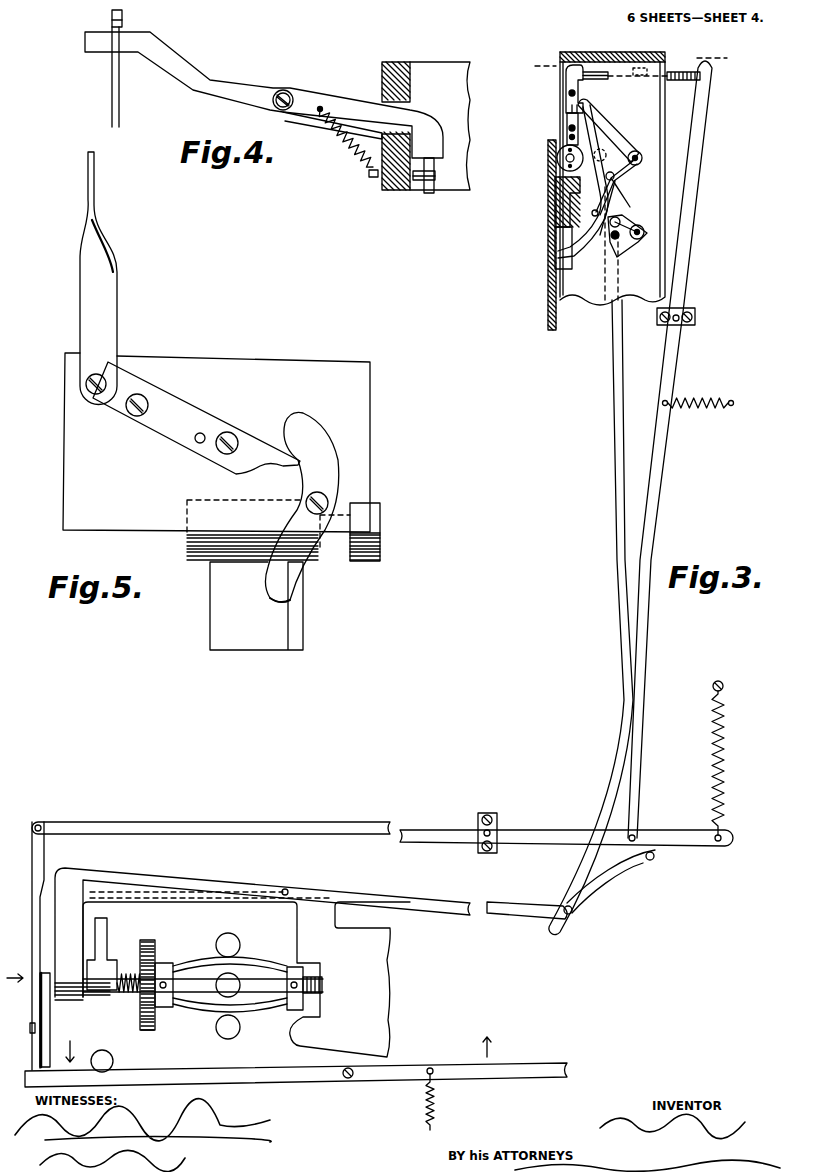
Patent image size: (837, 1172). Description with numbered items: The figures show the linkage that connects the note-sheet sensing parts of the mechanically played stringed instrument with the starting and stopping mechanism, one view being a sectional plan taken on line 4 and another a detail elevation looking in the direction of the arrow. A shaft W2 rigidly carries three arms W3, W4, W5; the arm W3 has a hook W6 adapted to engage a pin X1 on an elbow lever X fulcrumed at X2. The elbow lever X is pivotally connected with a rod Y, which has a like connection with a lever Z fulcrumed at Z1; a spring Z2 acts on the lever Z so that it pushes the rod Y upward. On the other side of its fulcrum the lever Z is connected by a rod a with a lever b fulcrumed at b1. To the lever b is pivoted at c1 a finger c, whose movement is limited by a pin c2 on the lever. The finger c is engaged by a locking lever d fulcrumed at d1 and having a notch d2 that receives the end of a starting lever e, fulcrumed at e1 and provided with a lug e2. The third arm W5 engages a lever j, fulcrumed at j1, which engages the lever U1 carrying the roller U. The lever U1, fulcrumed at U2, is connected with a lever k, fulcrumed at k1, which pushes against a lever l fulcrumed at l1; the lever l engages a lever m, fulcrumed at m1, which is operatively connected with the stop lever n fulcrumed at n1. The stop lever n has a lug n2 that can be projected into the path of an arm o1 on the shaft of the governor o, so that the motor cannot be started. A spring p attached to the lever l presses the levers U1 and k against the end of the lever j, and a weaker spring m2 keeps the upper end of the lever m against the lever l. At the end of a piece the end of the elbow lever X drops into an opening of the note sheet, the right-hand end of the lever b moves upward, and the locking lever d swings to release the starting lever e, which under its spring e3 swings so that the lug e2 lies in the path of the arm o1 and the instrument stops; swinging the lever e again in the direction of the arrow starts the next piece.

In FIG. 3, the section line 4 is at (630, 61).
In FIG. 5, the rod a is at (98, 278).
In FIG. 5, the lever b is at (187, 420).
In FIG. 3, the lever b is at (58, 1000).
In FIG. 5, the fulcrum of lever b b1 is at (130, 425).
In FIG. 5, the finger c is at (249, 452).
In FIG. 5, the pivot of finger c c1 is at (219, 461).
In FIG. 5, the pin c2 is at (231, 434).
In FIG. 5, the locking lever d is at (340, 497).
In FIG. 3, the locking lever d is at (30, 1048).
In FIG. 5, the fulcrum of locking lever d d1 is at (317, 483).
In FIG. 5, the notch d2 is at (273, 573).
In FIG. 3, the starting lever e is at (305, 1085).
In FIG. 3, the fulcrum of starting lever e e1 is at (353, 1084).
In FIG. 5, the lug e2 is at (370, 570).
In FIG. 3, the lug e2 is at (113, 1058).
In FIG. 3, the spring e3 is at (440, 1110).
In FIG. 3, the lever j is at (603, 140).
In FIG. 3, the fulcrum of lever j j1 is at (603, 173).
In FIG. 4, the lever k is at (421, 194).
In FIG. 3, the lever k is at (566, 75).
In FIG. 3, the fulcrum of lever k k1 is at (569, 95).
In FIG. 4, the lever l is at (205, 83).
In FIG. 3, the lever l is at (684, 66).
In FIG. 4, the fulcrum of lever l l1 is at (287, 88).
In FIG. 3, the fulcrum of lever l l1 is at (643, 74).
In FIG. 4, the lever m is at (118, 114).
In FIG. 3, the lever m is at (664, 493).
In FIG. 3, the fulcrum of lever m m1 is at (664, 327).
In FIG. 3, the spring m2 is at (715, 392).
In FIG. 3, the stop lever n is at (407, 900).
In FIG. 3, the fulcrum of stop lever n n1 is at (286, 889).
In FIG. 3, the lug n2 is at (118, 908).
In FIG. 3, the governor o is at (172, 967).
In FIG. 3, the governor arm o1 is at (107, 948).
In FIG. 4, the spring p is at (348, 160).
In FIG. 3, the upright bar u is at (25, 946).
In FIG. 3, the roller U is at (556, 158).
In FIG. 4, the lever U1 is at (433, 194).
In FIG. 3, the lever U1 is at (568, 128).
In FIG. 3, the fulcrum of lever U' U2 is at (568, 137).
In FIG. 3, the shaft W2 is at (645, 233).
In FIG. 3, the arm W3 is at (634, 241).
In FIG. 3, the arm W4 is at (650, 218).
In FIG. 3, the arm W5 is at (641, 213).
In FIG. 3, the hook W6 is at (611, 256).
In FIG. 3, the elbow lever X is at (627, 171).
In FIG. 3, the pin X1 is at (607, 231).
In FIG. 3, the fulcrum of elbow lever X X2 is at (637, 152).
In FIG. 3, the rod Y is at (612, 493).
In FIG. 3, the lever Z is at (673, 840).
In FIG. 3, the fulcrum of lever Z Z1 is at (498, 826).
In FIG. 3, the spring Z2 is at (730, 786).